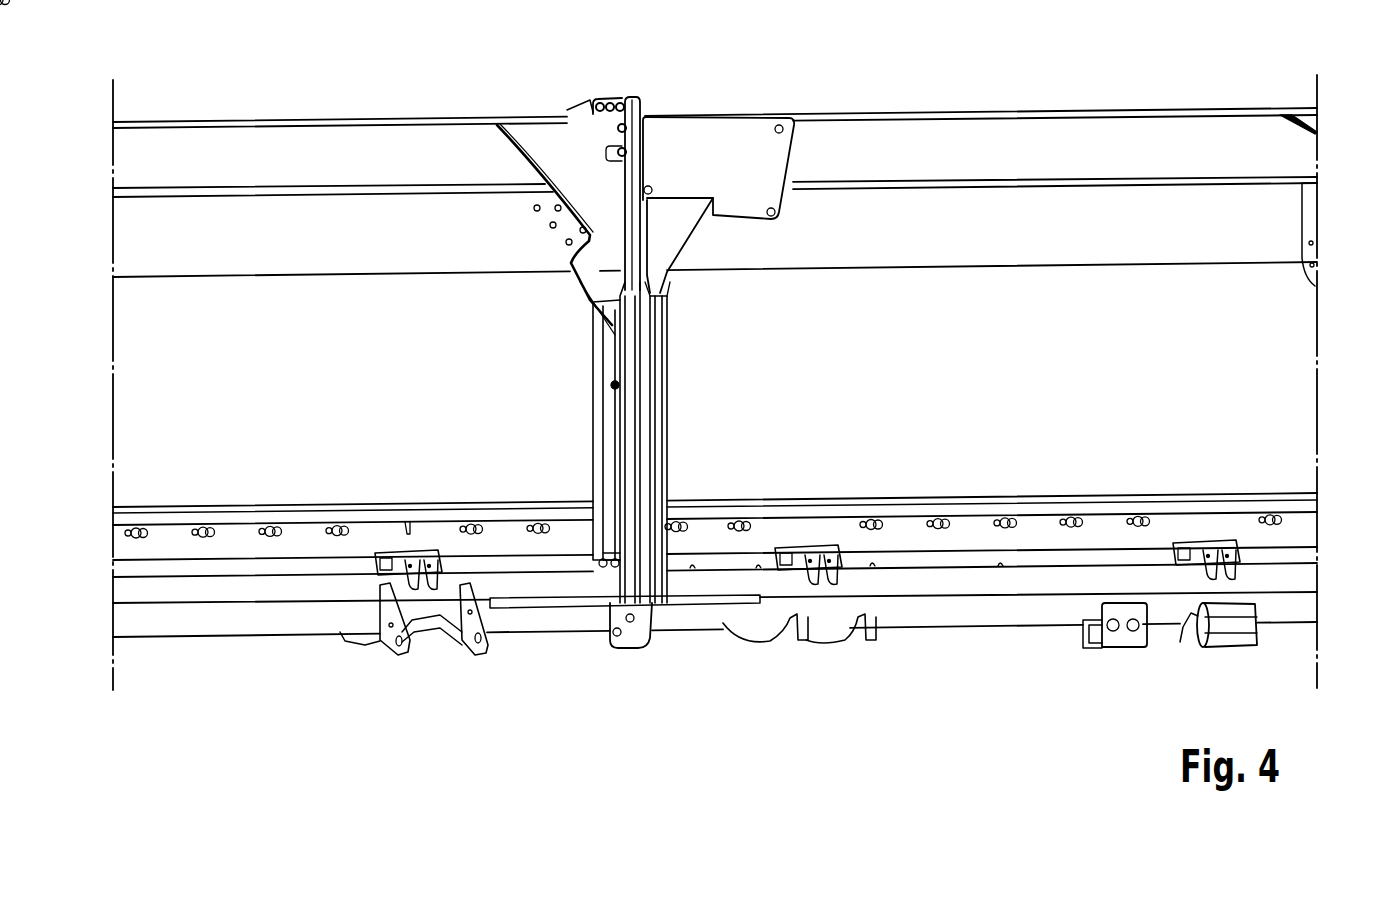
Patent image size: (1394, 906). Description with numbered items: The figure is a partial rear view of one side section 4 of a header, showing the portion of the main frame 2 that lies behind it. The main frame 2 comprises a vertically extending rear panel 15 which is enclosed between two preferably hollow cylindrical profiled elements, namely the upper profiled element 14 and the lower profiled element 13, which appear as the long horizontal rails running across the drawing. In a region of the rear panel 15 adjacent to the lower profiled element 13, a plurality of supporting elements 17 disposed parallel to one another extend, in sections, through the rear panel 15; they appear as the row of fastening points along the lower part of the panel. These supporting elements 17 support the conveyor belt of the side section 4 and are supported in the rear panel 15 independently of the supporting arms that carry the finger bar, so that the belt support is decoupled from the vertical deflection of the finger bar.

The side section 4 is at (1186, 95).
The profiled element 14 is at (1273, 160).
The rear panel 15 is at (1273, 368).
The main frame 2 is at (1328, 504).
The lower profiled element 13 is at (1287, 578).
The supporting element 17 is at (140, 538).